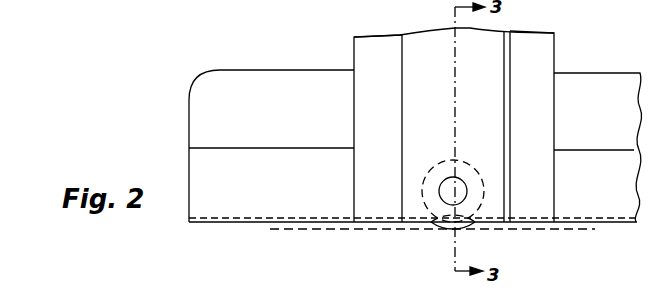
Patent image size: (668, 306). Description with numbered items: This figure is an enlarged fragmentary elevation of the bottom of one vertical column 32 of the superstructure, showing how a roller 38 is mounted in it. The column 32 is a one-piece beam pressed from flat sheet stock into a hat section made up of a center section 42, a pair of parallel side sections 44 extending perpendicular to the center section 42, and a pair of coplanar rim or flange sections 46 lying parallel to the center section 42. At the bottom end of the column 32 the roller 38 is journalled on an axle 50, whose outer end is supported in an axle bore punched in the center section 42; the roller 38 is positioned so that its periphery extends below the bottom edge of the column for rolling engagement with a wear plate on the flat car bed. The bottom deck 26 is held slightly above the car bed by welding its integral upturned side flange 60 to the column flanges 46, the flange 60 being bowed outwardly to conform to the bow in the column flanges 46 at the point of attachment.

The bottom deck 26 is at (193, 223).
The column 32 is at (552, 24).
The roller 38 is at (416, 221).
The center section 42 is at (428, 38).
The side sections 44 is at (401, 120).
The flange sections 46 is at (368, 52).
The axle 50 is at (457, 185).
The vertical flange 60 is at (197, 112).